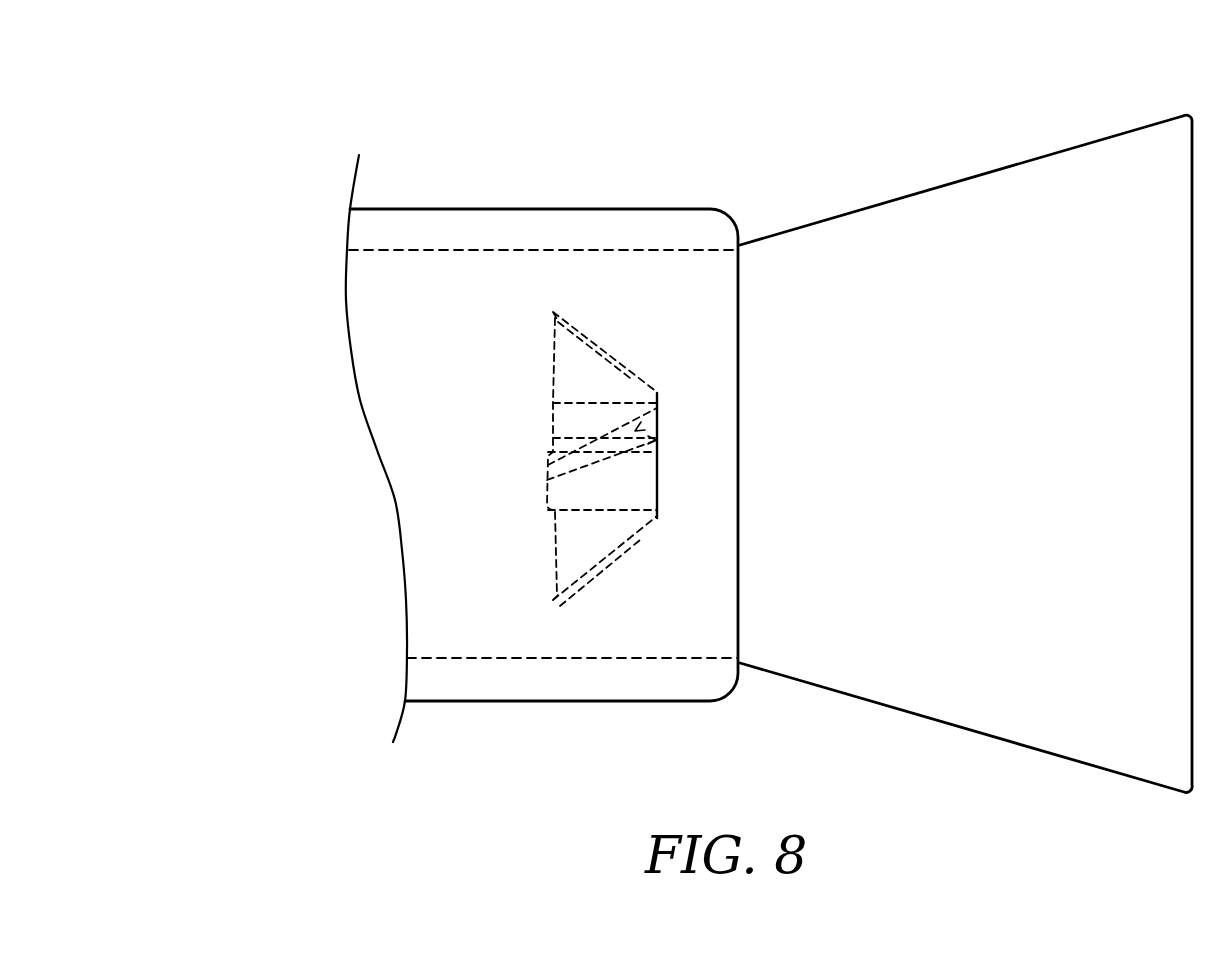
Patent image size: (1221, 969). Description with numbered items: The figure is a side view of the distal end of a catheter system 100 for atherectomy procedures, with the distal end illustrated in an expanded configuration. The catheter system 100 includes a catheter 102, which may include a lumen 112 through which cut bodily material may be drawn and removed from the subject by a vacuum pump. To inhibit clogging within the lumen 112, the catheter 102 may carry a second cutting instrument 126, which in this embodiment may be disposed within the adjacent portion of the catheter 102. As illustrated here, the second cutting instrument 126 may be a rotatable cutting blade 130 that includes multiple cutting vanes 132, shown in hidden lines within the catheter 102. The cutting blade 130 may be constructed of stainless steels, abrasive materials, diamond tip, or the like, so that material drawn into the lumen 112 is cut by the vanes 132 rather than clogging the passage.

The catheter system 100 is at (284, 101).
The catheter 102 is at (965, 178).
The lumen 112 is at (424, 252).
The second cutting instrument 126 is at (583, 272).
The rotatable cutting blade 130 is at (659, 480).
The cutting vanes 132 is at (629, 365).